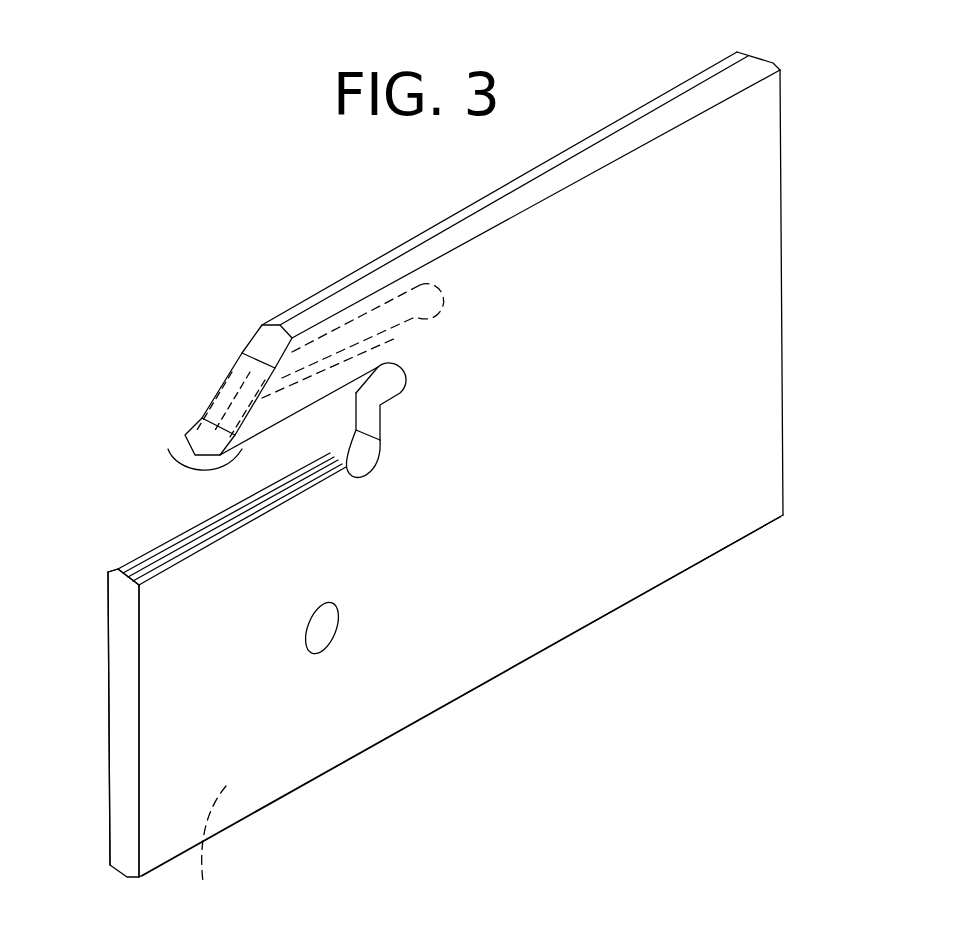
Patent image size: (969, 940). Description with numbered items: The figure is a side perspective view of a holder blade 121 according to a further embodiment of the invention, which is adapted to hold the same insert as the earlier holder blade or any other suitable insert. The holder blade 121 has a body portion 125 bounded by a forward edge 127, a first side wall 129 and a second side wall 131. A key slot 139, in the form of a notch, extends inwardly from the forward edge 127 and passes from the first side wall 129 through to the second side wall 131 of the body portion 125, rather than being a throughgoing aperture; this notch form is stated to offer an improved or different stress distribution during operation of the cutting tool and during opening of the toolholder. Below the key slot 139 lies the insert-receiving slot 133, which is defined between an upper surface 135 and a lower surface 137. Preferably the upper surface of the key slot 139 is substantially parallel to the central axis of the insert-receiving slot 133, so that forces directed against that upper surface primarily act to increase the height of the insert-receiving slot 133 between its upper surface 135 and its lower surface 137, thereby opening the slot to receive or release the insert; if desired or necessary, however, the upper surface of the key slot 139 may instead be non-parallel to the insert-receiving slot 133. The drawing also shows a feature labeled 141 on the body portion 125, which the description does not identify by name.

The holder blade 121 is at (814, 162).
The body portion 125 is at (783, 367).
The forward edge 127 is at (203, 437).
The first side wall 129 is at (287, 775).
The second side wall 131 is at (205, 850).
The insert-receiving slot 133 is at (232, 483).
The upper surface 135 is at (187, 460).
The lower surface 137 is at (136, 561).
The key slot 139 is at (396, 305).
The elongated hole 141 is at (325, 632).